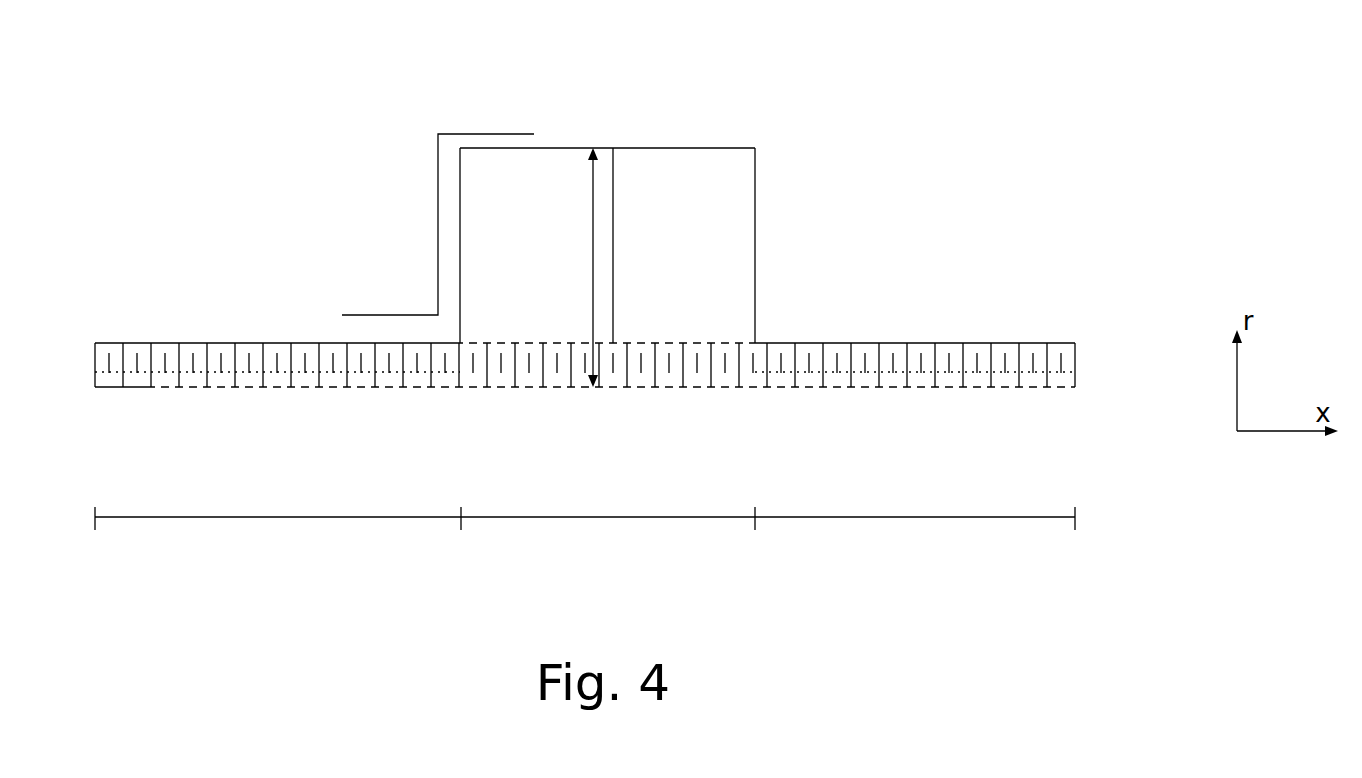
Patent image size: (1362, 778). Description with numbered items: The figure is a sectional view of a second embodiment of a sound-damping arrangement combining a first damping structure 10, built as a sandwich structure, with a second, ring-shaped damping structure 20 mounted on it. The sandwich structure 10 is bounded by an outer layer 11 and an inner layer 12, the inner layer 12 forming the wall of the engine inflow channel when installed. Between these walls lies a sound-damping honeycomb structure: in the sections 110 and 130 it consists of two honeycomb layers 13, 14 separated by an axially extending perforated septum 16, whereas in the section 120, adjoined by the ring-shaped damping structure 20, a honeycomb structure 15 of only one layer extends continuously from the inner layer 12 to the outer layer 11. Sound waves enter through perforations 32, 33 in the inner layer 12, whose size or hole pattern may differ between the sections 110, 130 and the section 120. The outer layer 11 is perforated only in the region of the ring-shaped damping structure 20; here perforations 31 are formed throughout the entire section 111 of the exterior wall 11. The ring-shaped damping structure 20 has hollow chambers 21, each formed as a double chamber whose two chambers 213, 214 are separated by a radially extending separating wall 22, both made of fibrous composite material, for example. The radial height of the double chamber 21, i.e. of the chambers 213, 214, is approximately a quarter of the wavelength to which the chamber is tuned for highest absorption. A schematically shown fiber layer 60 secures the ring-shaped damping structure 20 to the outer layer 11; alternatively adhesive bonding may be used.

The first damping structure 10 is at (238, 406).
The outer layer 11 is at (228, 343).
The inner layer 12 is at (418, 388).
The honeycomb layer 13 is at (1075, 352).
The honeycomb layer 14 is at (1075, 378).
The honeycomb structure 15 is at (668, 388).
The perforated septum 16 is at (1027, 368).
The ring-shaped damping structure 20 is at (663, 203).
The hollow chamber 21 is at (757, 200).
The separating wall 22 is at (614, 218).
The perforations 31 is at (508, 343).
The perforations 32 is at (325, 388).
The perforations 33 is at (522, 388).
The fiber layer 60 is at (437, 158).
The section 110 is at (278, 532).
The section of the exterior wall 111 is at (666, 343).
The section 120 is at (608, 532).
The section 130 is at (915, 532).
The chamber 213 is at (563, 152).
The chamber 214 is at (703, 155).